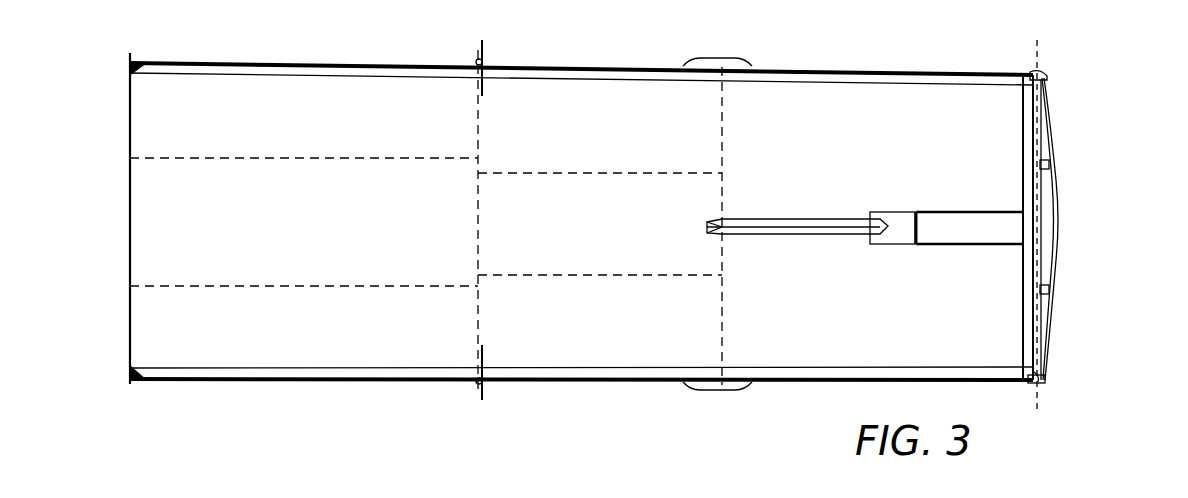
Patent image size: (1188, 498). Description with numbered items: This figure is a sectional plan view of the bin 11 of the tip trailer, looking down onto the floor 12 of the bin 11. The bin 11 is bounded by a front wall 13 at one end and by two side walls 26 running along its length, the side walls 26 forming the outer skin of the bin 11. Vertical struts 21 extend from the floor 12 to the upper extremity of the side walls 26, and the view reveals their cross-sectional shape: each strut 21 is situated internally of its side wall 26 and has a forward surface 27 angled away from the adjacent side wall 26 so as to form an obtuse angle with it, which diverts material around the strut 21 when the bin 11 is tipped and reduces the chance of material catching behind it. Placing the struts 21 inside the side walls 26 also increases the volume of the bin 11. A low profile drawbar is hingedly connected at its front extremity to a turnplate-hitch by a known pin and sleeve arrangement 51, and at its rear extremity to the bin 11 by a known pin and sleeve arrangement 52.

The bin 11 is at (1112, 122).
The floor 12 is at (598, 240).
The front wall 13 is at (1040, 252).
The vertical strut 21 is at (130, 66).
The side wall 26 is at (365, 63).
The forward surface 27 is at (136, 73).
The pin and sleeve arrangement 51 is at (1040, 384).
The pin and sleeve arrangement 52 is at (478, 383).